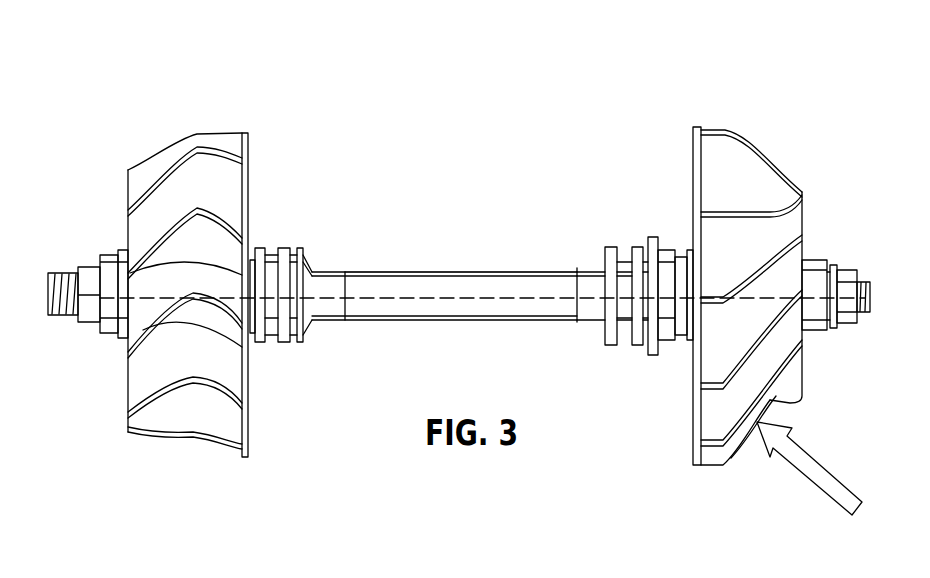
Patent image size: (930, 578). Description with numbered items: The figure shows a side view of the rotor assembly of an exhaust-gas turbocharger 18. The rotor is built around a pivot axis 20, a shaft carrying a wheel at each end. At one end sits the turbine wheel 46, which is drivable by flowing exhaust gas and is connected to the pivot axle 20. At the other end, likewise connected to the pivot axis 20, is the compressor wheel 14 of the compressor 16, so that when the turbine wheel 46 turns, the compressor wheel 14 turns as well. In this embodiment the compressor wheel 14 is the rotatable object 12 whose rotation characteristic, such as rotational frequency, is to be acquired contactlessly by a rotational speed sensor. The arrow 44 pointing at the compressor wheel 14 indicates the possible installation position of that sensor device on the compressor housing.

The rotatable object 12 is at (781, 254).
The compressor wheel 14 is at (727, 178).
The compressor 16 is at (660, 195).
The exhaust-gas turbocharger 18 is at (525, 125).
The pivot axis 20 is at (452, 288).
The arrow 44 is at (813, 472).
The turbine wheel 46 is at (222, 140).